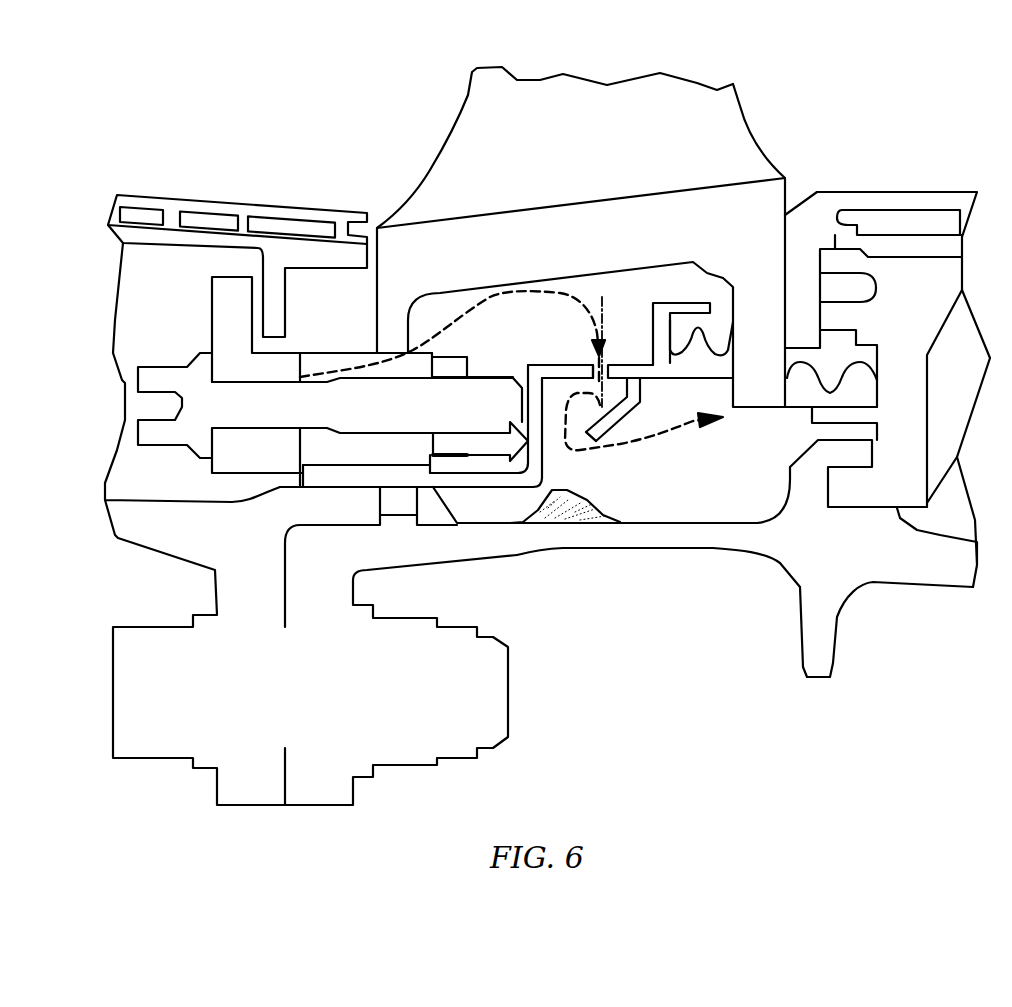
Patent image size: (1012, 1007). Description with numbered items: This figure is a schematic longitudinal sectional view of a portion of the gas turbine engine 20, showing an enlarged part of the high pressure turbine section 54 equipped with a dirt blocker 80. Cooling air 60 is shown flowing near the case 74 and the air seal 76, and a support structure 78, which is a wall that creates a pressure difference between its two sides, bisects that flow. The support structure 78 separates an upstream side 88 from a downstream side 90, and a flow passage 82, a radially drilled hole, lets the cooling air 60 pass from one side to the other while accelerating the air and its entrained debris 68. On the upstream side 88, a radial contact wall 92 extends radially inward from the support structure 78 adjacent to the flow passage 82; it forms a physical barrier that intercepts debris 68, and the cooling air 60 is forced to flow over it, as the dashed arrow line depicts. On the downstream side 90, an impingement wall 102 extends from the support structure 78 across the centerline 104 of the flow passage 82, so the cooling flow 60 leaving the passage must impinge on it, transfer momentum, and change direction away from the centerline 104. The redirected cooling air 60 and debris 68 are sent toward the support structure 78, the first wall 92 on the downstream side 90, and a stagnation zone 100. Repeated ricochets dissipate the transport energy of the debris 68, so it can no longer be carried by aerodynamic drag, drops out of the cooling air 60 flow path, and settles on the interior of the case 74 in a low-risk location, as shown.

The gas turbine engine 20 is at (140, 104).
The high pressure turbine section 54 is at (343, 110).
The cooling air 60 is at (465, 313).
The debris 68 is at (488, 438).
The case 74 is at (803, 646).
The air seal 76 is at (853, 192).
The support structure 78 is at (502, 488).
The dirt blocker 80 is at (519, 335).
The flow passage 82 is at (590, 357).
The upstream side 88 is at (628, 364).
The downstream side 90 is at (687, 384).
The radial contact wall 92 is at (527, 373).
The stagnation zone 100 is at (598, 489).
The impingement wall 102 is at (607, 442).
The centerline 104 is at (603, 292).